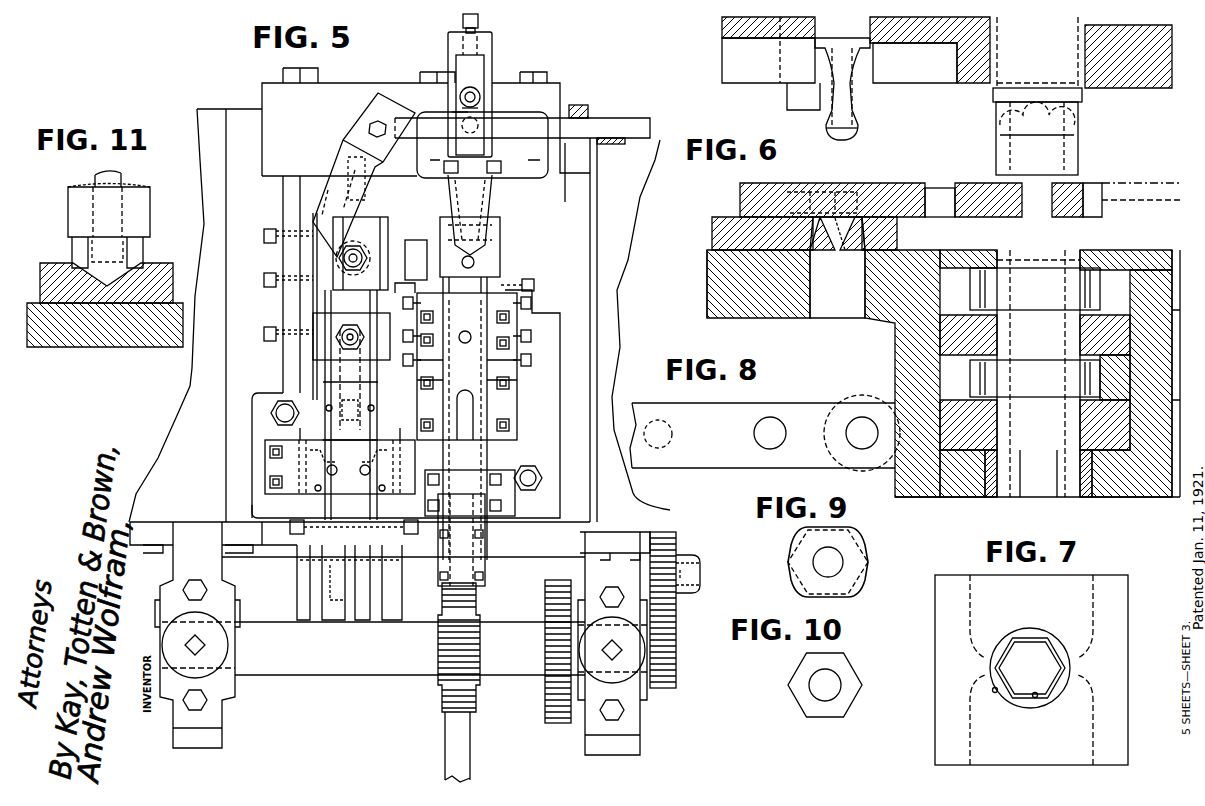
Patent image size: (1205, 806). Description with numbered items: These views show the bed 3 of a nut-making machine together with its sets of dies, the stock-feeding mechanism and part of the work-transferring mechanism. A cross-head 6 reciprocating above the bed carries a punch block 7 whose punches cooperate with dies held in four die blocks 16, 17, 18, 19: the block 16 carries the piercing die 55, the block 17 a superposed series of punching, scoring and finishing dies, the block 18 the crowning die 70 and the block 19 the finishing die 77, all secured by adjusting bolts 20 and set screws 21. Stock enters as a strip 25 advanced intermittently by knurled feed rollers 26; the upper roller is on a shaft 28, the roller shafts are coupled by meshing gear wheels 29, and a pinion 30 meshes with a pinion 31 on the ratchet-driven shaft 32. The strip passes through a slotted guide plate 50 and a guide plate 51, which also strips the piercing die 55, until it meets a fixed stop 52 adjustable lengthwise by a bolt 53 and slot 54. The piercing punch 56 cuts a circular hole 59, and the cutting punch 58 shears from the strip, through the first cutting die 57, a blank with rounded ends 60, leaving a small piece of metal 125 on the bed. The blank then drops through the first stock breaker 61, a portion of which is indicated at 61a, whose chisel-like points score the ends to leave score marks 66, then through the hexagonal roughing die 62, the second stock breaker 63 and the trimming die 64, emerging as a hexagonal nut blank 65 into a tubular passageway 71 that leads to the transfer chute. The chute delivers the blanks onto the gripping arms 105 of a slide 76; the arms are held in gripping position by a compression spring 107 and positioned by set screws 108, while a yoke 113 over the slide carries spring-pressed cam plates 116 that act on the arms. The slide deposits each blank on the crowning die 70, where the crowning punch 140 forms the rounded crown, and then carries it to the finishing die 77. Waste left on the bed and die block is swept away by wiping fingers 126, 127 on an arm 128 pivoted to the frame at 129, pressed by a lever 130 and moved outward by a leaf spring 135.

In FIG. 5, the bed 3 is at (296, 208).
In FIG. 11, the bed 3 is at (97, 338).
In FIG. 6, the bed 3 is at (958, 488).
In FIG. 5, the cross-head 6 is at (437, 194).
In FIG. 6, the punch block 7 is at (935, 72).
In FIG. 5, the die block 16 is at (512, 378).
In FIG. 5, the die block 17 is at (500, 262).
In FIG. 5, the die block 18 is at (340, 405).
In FIG. 5, the die block 19 is at (368, 216).
In FIG. 5, the adjusting bolts 20 is at (416, 338).
In FIG. 5, the set screws 21 is at (271, 282).
In FIG. 5, the strip 25 is at (445, 738).
In FIG. 6, the strip 25 is at (762, 184).
In FIG. 8, the strip 25 is at (660, 396).
In FIG. 5, the feed rollers 26 is at (440, 700).
In FIG. 5, the shaft 28 is at (334, 668).
In FIG. 5, the gear wheels 29 is at (545, 598).
In FIG. 5, the pinion 30 is at (642, 700).
In FIG. 5, the pinion 31 is at (676, 540).
In FIG. 5, the shaft 32 is at (698, 578).
In FIG. 5, the slotted guide plate 50 is at (486, 540).
In FIG. 5, the guide plate 51 is at (512, 396).
In FIG. 5, the fixed stop 52 is at (478, 198).
In FIG. 6, the fixed stop 52 is at (1128, 183).
In FIG. 5, the bolt 53 is at (482, 98).
In FIG. 5, the slot 54 is at (470, 85).
In FIG. 5, the piercing die 55 is at (418, 344).
In FIG. 6, the piercing die 55 is at (837, 267).
In FIG. 6, the piercing punch 56 is at (856, 118).
In FIG. 6, the first cutting die 57 is at (1104, 202).
In FIG. 7, the first cutting die 57 is at (995, 690).
In FIG. 6, the cutting punch 58 is at (1082, 120).
In FIG. 6, the circular hole 59 is at (932, 188).
In FIG. 8, the circular hole 59 is at (766, 420).
In FIG. 9, the circular hole 59 is at (838, 556).
In FIG. 8, the rounded ends 60 is at (798, 395).
In FIG. 9, the rounded ends 60 is at (790, 575).
In FIG. 5, the scoring die or scrap stock breaker 61 is at (490, 229).
In FIG. 6, the scoring die or scrap stock breaker 61 is at (1070, 302).
In FIG. 7, the scoring die or scrap stock breaker 61 is at (972, 624).
In FIG. 6, the sleeve flange 61a is at (960, 340).
In FIG. 7, the sleeve flange 61a is at (1020, 705).
In FIG. 6, the roughing die 62 is at (1075, 283).
In FIG. 7, the roughing die 62 is at (985, 665).
In FIG. 6, the second stock breaker 63 is at (958, 378).
In FIG. 6, the trimming die 64 is at (1110, 432).
In FIG. 7, the trimming die 64 is at (1040, 705).
In FIG. 10, the nut blank 65 is at (800, 663).
In FIG. 9, the score marks 66 is at (790, 560).
In FIG. 5, the crowning die 70 is at (338, 350).
In FIG. 11, the crowning die 70 is at (158, 262).
In FIG. 6, the crowning die 70 is at (714, 230).
In FIG. 6, the tubular passageway 71 is at (1012, 492).
In FIG. 5, the slide 76 is at (312, 508).
In FIG. 5, the finishing die 77 is at (362, 252).
In FIG. 6, the finishing die 77 is at (980, 184).
In FIG. 5, the gripping arms 105 is at (368, 390).
In FIG. 5, the compression spring 107 is at (385, 596).
In FIG. 5, the set screws 108 is at (345, 528).
In FIG. 5, the yoke 113 is at (300, 462).
In FIG. 5, the plates 116 is at (353, 428).
In FIG. 5, the piece of metal 125 is at (476, 249).
In FIG. 5, the wiping finger 126 is at (450, 232).
In FIG. 5, the wiping finger 127 is at (335, 186).
In FIG. 5, the arm 128 is at (628, 127).
In FIG. 5, the pivot 129 is at (455, 113).
In FIG. 5, the lever 130 is at (587, 96).
In FIG. 5, the leaf spring 135 is at (612, 144).
In FIG. 11, the crowning punch 140 is at (72, 208).
In FIG. 6, the crowning punch 140 is at (787, 96).